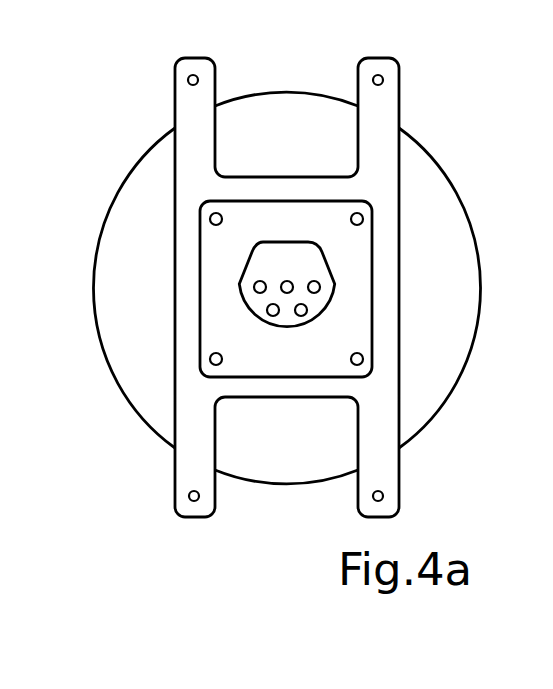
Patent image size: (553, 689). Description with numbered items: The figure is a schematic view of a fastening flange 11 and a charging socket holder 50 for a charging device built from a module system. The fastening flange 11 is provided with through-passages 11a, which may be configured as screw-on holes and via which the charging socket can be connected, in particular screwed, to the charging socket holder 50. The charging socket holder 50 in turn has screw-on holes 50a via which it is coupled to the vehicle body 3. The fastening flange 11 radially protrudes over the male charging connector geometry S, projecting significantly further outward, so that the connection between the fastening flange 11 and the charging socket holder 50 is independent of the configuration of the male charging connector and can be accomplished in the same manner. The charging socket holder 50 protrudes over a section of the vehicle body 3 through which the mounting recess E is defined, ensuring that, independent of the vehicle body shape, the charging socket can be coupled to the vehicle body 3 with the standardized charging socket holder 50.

The vehicle body 3 is at (282, 484).
The mounting recess E is at (428, 390).
The charging socket holder 50 is at (388, 102).
The screw-on holes 50a is at (189, 81).
The fastening flange 11 is at (228, 257).
The through-passages 11a is at (363, 219).
The male charging connector geometry S is at (335, 293).